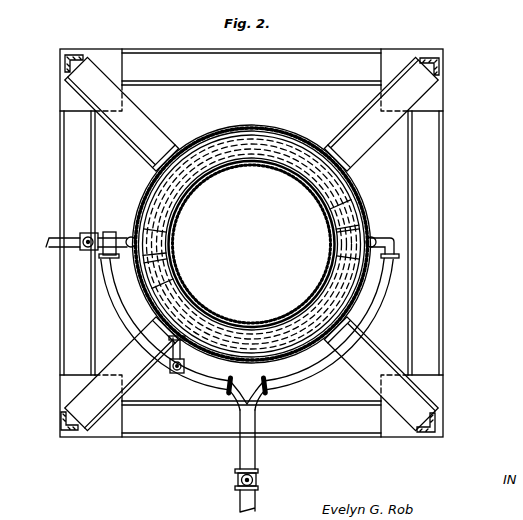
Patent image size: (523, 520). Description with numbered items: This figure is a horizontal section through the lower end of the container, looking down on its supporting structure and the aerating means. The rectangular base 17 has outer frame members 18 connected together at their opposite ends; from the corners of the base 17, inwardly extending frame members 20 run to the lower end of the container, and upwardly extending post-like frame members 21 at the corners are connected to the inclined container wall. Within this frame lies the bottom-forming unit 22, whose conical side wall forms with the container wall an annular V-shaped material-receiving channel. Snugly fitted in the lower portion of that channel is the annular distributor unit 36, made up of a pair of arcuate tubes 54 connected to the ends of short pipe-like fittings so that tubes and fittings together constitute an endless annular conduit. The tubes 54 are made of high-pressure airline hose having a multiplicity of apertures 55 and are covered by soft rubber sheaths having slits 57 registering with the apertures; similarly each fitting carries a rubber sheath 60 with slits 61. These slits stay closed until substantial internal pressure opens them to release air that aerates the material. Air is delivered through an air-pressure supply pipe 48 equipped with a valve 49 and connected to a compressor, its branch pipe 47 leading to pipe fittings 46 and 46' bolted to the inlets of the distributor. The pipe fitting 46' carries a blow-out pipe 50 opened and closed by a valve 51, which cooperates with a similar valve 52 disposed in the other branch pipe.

The rectangular base 17 is at (446, 154).
The outer frame members 18 is at (333, 63).
The inwardly extending frame members 20 is at (158, 136).
The post-like frame members 21 is at (440, 63).
The bottom-forming unit 22 is at (327, 253).
The annular distributor unit 36 is at (257, 129).
The pipe fitting 46 is at (415, 247).
The pipe fitting 46' is at (117, 236).
The branch pipe 47 is at (114, 295).
The air-pressure supply pipe 48 is at (251, 461).
The valve 49 is at (237, 480).
The blow-out pipe 50 is at (57, 247).
The valve 51 is at (87, 236).
The valve 52 is at (176, 372).
The arcuate tubes 54 is at (301, 151).
The apertures 55 is at (164, 271).
The slits 57 is at (345, 199).
The sheath 60 is at (356, 231).
The slits 61 is at (160, 235).